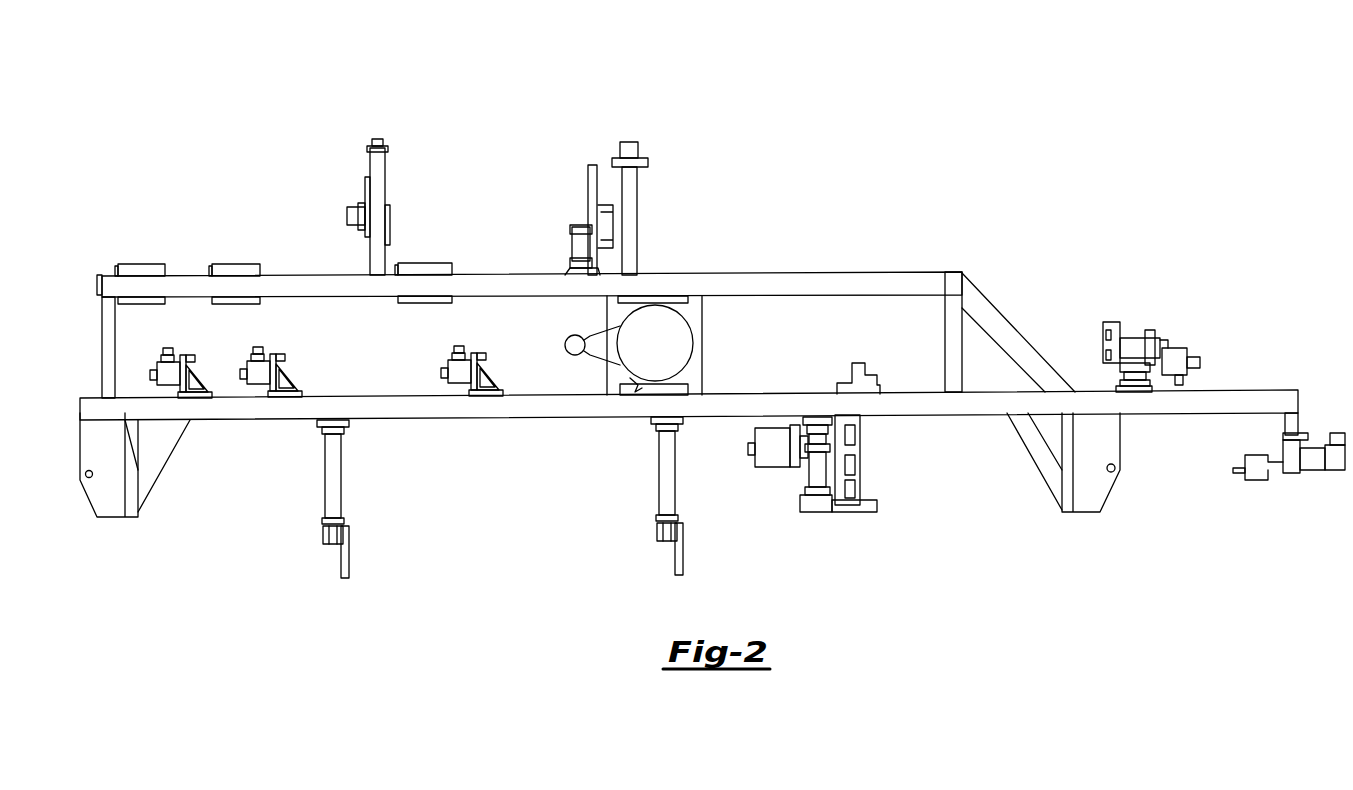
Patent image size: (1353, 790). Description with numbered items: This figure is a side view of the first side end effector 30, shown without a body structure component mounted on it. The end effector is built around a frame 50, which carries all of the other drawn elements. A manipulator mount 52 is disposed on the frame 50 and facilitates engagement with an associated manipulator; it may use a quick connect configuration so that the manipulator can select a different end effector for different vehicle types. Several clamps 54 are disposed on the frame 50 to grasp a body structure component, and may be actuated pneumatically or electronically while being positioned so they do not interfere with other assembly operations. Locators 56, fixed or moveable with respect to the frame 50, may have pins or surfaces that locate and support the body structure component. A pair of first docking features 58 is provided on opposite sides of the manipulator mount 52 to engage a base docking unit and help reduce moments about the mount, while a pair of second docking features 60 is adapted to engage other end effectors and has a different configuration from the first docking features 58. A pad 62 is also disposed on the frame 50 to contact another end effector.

The first side end effector 30 is at (922, 195).
The frame 50 is at (772, 273).
The manipulator mount 52 is at (660, 350).
The clamp 54 is at (576, 225).
The locator 56 is at (347, 213).
The first docking feature 58 is at (119, 510).
The second docking feature 60 is at (106, 275).
The pad 62 is at (378, 138).